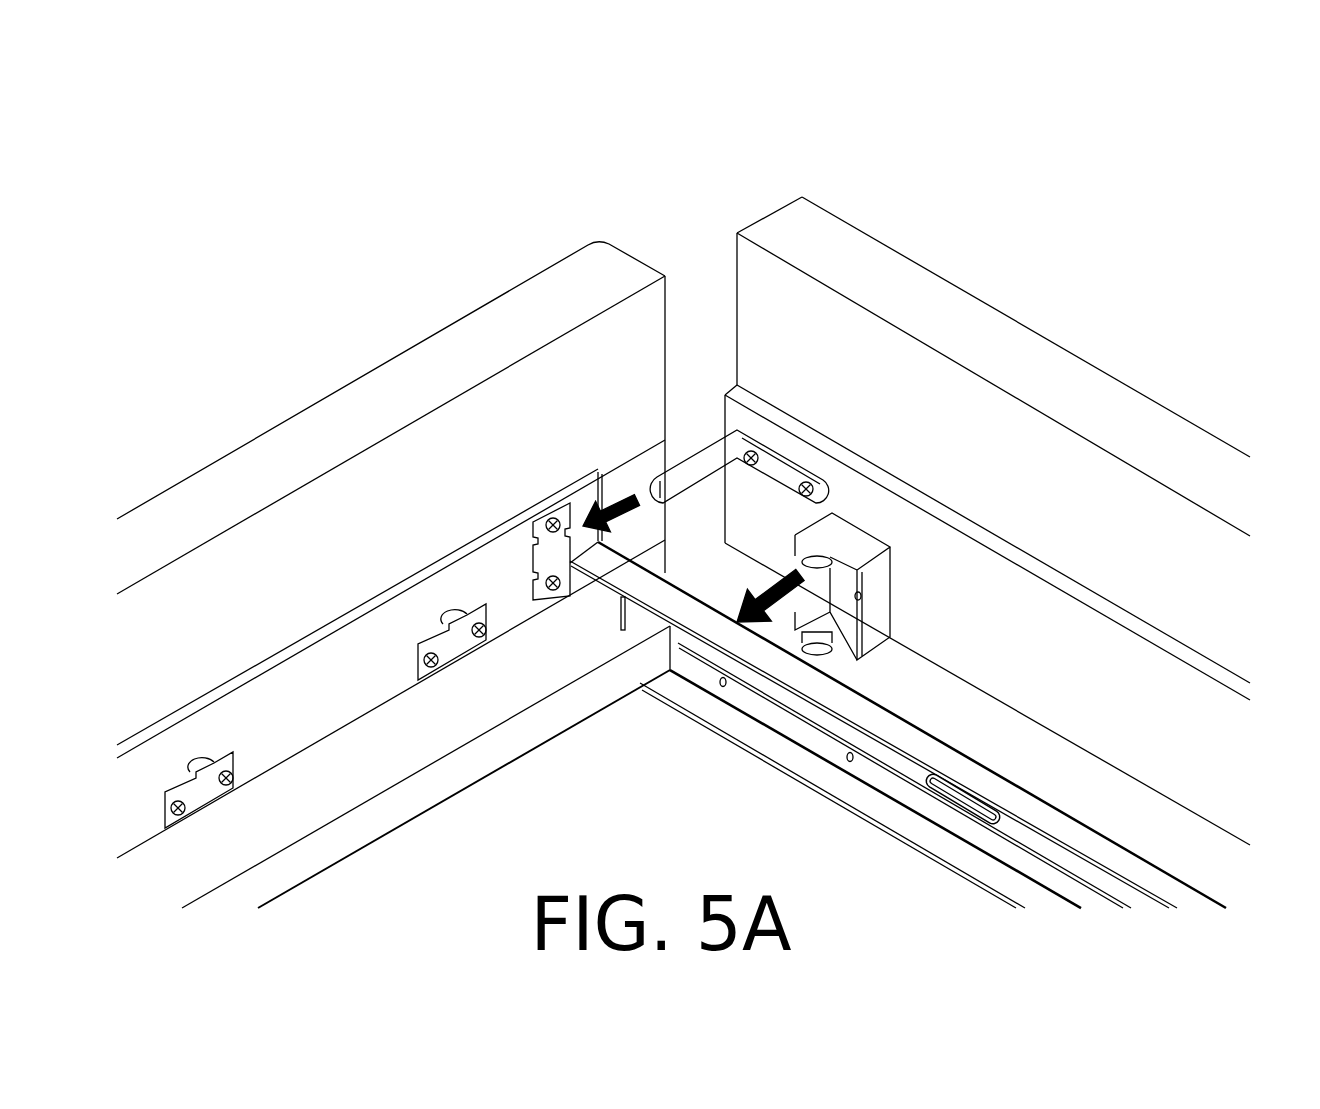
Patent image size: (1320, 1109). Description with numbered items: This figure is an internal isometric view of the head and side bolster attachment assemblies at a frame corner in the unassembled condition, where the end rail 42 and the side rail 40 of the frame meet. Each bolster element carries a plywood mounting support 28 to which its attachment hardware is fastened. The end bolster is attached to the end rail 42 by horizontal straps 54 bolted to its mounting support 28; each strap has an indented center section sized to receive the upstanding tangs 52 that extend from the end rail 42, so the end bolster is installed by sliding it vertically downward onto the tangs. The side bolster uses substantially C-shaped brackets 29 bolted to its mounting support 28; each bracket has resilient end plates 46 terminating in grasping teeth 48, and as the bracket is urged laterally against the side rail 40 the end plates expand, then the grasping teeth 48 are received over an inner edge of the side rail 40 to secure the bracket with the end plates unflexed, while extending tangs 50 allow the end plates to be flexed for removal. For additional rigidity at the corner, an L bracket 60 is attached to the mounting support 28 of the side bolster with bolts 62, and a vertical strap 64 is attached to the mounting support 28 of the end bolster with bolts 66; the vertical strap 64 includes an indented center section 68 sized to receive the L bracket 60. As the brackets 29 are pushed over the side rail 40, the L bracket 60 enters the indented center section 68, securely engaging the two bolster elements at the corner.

The mounting support 28 is at (502, 590).
The bracket 29 is at (892, 648).
The side rail 40 is at (893, 720).
The end rail 42 is at (456, 778).
The end plate 46 is at (853, 540).
The grasping teeth 48 is at (800, 700).
The extending tang 50 is at (805, 690).
The upstanding tang 52 is at (448, 620).
The horizontal strap 54 is at (432, 645).
The L bracket 60 is at (698, 468).
The bolt 62 is at (752, 450).
The vertical strap 64 is at (566, 480).
The bolt 66 is at (553, 592).
The indented center section 68 is at (548, 535).